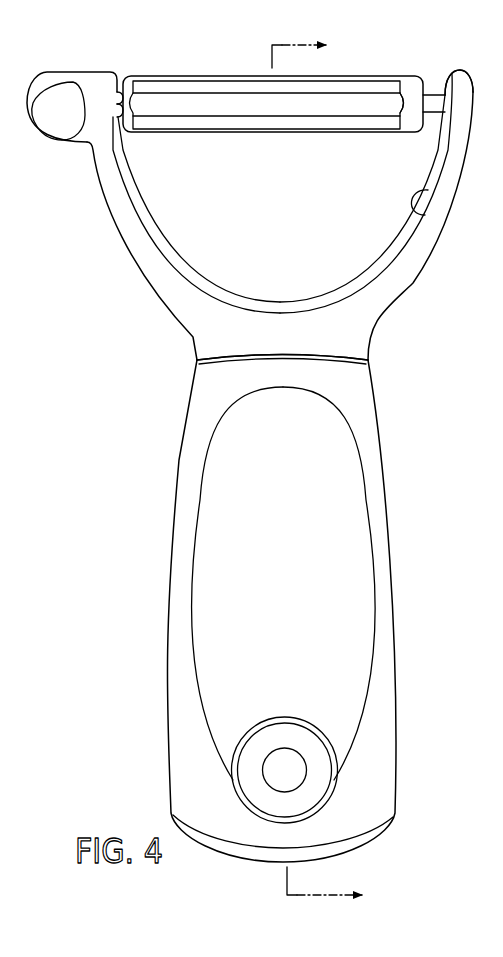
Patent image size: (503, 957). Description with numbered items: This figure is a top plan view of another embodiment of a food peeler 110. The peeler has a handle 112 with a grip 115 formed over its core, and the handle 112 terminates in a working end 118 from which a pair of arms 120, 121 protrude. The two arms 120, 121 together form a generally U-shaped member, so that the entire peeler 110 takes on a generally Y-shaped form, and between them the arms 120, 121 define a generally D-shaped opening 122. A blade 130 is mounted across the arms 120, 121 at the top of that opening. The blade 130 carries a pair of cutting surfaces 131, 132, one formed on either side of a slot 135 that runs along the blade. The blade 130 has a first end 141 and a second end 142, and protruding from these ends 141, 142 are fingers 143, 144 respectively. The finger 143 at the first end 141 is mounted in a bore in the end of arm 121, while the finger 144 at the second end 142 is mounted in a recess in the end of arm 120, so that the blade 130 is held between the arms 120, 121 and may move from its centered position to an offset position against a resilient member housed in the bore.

The food peeler 110 is at (261, 472).
The handle 112 is at (392, 652).
The grip 115 is at (217, 548).
The working end 118 is at (196, 356).
The arm 120 is at (261, 199).
The arm 121 is at (147, 256).
The D-shaped opening 122 is at (428, 216).
The blade 130 is at (265, 109).
The cutting surface 131 is at (353, 120).
The cutting surface 132 is at (383, 83).
The slot 135 is at (213, 102).
The first end 141 is at (116, 92).
The second end 142 is at (422, 86).
The finger 143 is at (117, 107).
The finger 144 is at (443, 102).